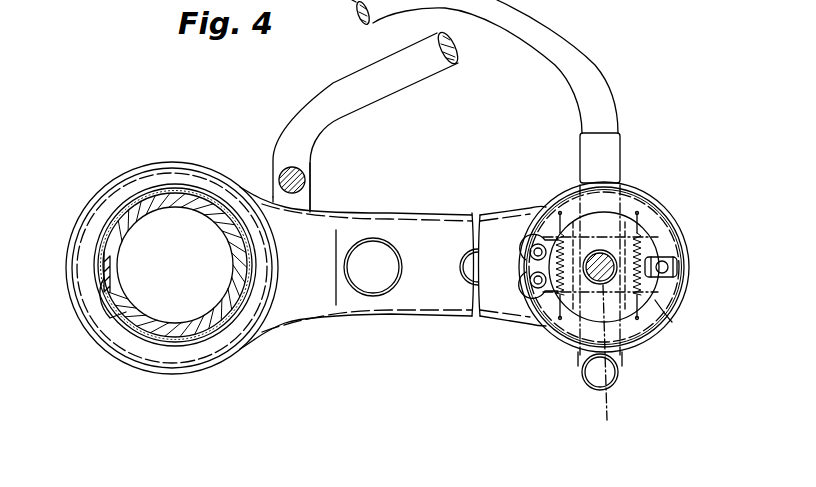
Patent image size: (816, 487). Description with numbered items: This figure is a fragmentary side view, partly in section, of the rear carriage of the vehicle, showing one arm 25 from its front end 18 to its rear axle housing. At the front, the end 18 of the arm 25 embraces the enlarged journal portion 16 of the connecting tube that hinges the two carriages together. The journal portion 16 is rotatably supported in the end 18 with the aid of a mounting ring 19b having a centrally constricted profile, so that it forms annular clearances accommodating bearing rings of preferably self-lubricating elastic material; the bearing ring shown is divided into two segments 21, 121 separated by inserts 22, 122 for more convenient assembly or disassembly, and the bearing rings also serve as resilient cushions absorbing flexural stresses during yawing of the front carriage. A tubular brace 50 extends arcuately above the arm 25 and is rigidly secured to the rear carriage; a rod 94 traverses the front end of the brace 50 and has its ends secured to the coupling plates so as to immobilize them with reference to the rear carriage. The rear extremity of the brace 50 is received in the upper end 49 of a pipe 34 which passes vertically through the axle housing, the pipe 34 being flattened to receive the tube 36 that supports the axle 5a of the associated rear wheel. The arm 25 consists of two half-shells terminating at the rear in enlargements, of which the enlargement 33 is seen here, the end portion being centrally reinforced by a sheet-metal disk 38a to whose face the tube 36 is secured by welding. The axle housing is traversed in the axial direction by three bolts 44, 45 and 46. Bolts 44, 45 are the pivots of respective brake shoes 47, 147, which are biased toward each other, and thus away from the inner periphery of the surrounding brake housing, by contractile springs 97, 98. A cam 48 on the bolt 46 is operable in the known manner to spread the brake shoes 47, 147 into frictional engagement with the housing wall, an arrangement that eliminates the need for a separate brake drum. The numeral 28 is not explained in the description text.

The front end of arm 18 is at (98, 187).
The mounting ring 19b is at (107, 227).
The bearing ring segment 21 is at (192, 192).
The journal portion 16 is at (143, 213).
The insert 22 is at (108, 278).
The insert 122 is at (248, 288).
The bearing ring segment 121 is at (121, 318).
The arm 25 is at (440, 322).
The rod 94 is at (305, 178).
The tubular brace 50 is at (520, 45).
The upper end of pipe 49 is at (604, 133).
The pipe 34 is at (621, 165).
The enlargement 33 is at (686, 283).
The brake shoe 147 is at (653, 222).
The axle 5a is at (596, 252).
The bolt 44 is at (535, 245).
The bolt 45 is at (534, 285).
The cam 48 is at (674, 254).
The contractile spring 97 is at (557, 290).
The brake shoe 47 is at (645, 322).
The contractile spring 98 is at (641, 298).
The sheet-metal disk 38a is at (566, 340).
The bolt 46 is at (668, 315).
The tube 36 is at (604, 389).
The cable 28 is at (588, 395).